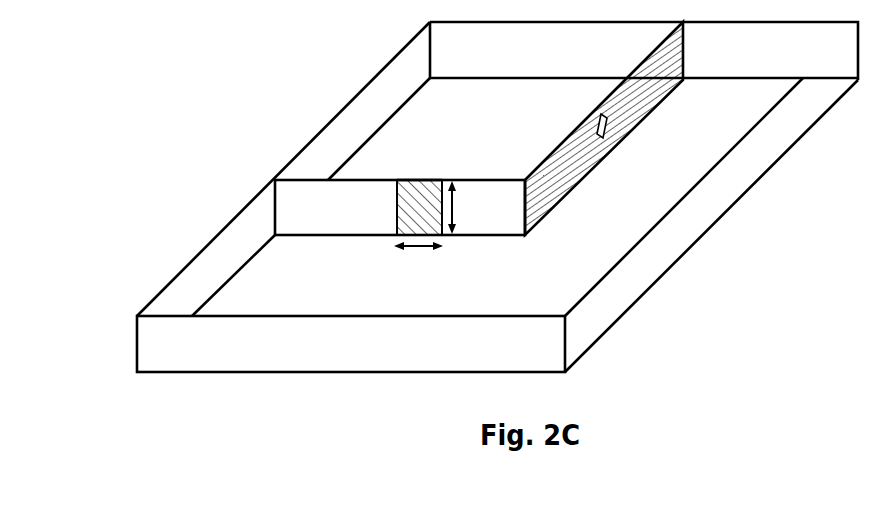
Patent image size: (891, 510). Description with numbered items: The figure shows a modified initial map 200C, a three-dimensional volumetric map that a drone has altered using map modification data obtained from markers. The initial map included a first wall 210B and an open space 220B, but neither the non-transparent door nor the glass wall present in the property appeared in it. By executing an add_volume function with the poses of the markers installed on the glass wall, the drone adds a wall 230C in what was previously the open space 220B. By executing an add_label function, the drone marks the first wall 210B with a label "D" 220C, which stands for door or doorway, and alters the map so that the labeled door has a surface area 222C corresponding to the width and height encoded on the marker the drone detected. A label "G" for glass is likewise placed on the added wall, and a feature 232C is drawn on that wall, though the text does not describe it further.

The modified initial map 200C is at (160, 53).
The first wall 210B is at (328, 208).
The open space 220B is at (555, 106).
The label "D" 220C is at (406, 213).
The surface area 222C is at (405, 190).
The wall 230C is at (553, 204).
The coupling feature 232C is at (598, 138).